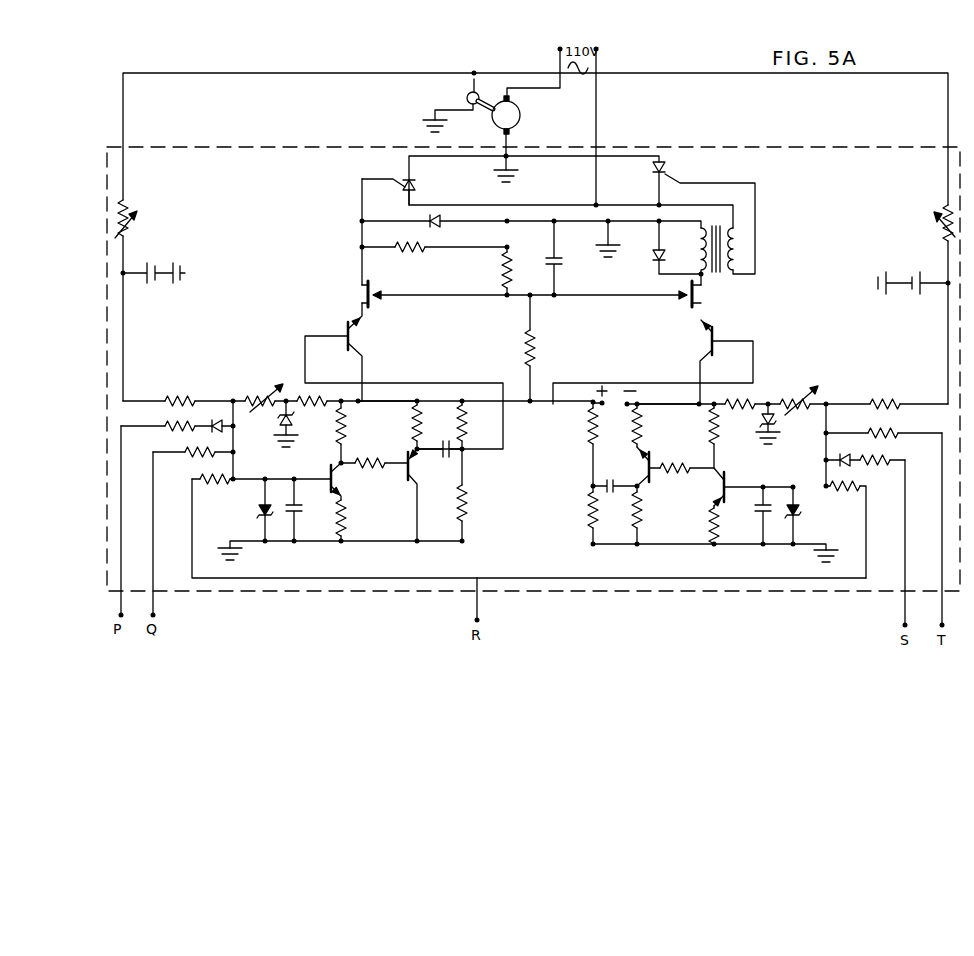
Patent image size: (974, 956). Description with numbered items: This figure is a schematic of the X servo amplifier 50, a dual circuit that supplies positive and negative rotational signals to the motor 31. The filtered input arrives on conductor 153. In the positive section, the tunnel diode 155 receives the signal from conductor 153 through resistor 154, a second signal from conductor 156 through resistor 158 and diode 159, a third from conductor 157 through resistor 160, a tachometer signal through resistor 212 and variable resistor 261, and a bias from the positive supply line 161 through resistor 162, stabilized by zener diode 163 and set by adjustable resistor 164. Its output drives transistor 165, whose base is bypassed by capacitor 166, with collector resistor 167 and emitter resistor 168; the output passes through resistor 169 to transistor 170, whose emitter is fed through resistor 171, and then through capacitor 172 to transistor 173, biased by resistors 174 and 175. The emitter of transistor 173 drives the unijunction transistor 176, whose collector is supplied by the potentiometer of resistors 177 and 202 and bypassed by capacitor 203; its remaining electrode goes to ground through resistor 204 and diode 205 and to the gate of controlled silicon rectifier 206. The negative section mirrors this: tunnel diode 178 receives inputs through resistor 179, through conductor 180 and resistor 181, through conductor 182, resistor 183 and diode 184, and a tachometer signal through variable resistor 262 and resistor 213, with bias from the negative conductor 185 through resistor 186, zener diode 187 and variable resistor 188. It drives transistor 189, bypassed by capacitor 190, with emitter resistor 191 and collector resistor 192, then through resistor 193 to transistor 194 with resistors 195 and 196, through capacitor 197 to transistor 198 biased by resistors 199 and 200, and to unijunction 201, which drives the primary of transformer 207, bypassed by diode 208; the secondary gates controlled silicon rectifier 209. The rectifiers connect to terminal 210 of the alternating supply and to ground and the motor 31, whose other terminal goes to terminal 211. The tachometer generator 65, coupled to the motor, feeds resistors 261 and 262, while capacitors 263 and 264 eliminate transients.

The motor 31 is at (520, 112).
The X servo amplifier 50 is at (298, 150).
The tachometer generator 65 is at (467, 98).
The conductor 153 is at (192, 528).
The resistor 154 is at (223, 478).
The tunnel diode 155 is at (259, 512).
The conductor 156 is at (121, 516).
The conductor 157 is at (153, 556).
The resistor 158 is at (185, 425).
The diode 159 is at (222, 424).
The resistor 160 is at (190, 452).
The positive supply line 161 is at (398, 399).
The resistor 162 is at (329, 398).
The zener diode 163 is at (294, 416).
The adjustable resistor 164 is at (266, 399).
The transistor 165 is at (336, 482).
The capacitor 166 is at (299, 505).
The resistor 167 is at (346, 434).
The resistor 168 is at (342, 525).
The resistor 169 is at (387, 462).
The transistor 170 is at (414, 465).
The resistor 171 is at (416, 425).
The capacitor 172 is at (444, 441).
The transistor 173 is at (352, 343).
The resistor 174 is at (461, 428).
The resistor 175 is at (462, 497).
The unijunction transistor 176 is at (364, 295).
The resistor 177 is at (532, 350).
The tunnel diode 178 is at (798, 511).
The resistor 179 is at (851, 489).
The conductor 180 is at (942, 566).
The resistor 181 is at (895, 431).
The conductor 182 is at (905, 537).
The resistor 183 is at (863, 459).
The diode 184 is at (845, 465).
The conductor 185 is at (689, 403).
The resistor 186 is at (757, 403).
The zener diode 187 is at (761, 420).
The variable resistor 188 is at (803, 402).
The transistor 189 is at (721, 487).
The capacitor 190 is at (762, 510).
The resistor 191 is at (713, 520).
The resistor 192 is at (712, 437).
The resistor 193 is at (686, 466).
The transistor 194 is at (650, 478).
The resistor 195 is at (634, 434).
The resistor 196 is at (634, 520).
The capacitor 197 is at (615, 474).
The transistor 198 is at (706, 343).
The resistor 199 is at (588, 434).
The resistor 200 is at (590, 514).
The unijunction transistor 201 is at (697, 294).
The resistor 202 is at (503, 268).
The capacitor 203 is at (563, 266).
The resistor 204 is at (406, 257).
The diode 205 is at (436, 224).
The controlled silicon rectifier 206 is at (412, 188).
The transformer 207 is at (701, 260).
The diode 208 is at (652, 264).
The controlled silicon rectifier 209 is at (704, 214).
The terminal 210 is at (599, 52).
The terminal 211 is at (535, 70).
The resistor 212 is at (169, 399).
The resistor 213 is at (905, 404).
The variable resistor 261 is at (140, 219).
The variable resistor 262 is at (928, 226).
The capacitor 263 is at (153, 284).
The capacitor 264 is at (914, 294).